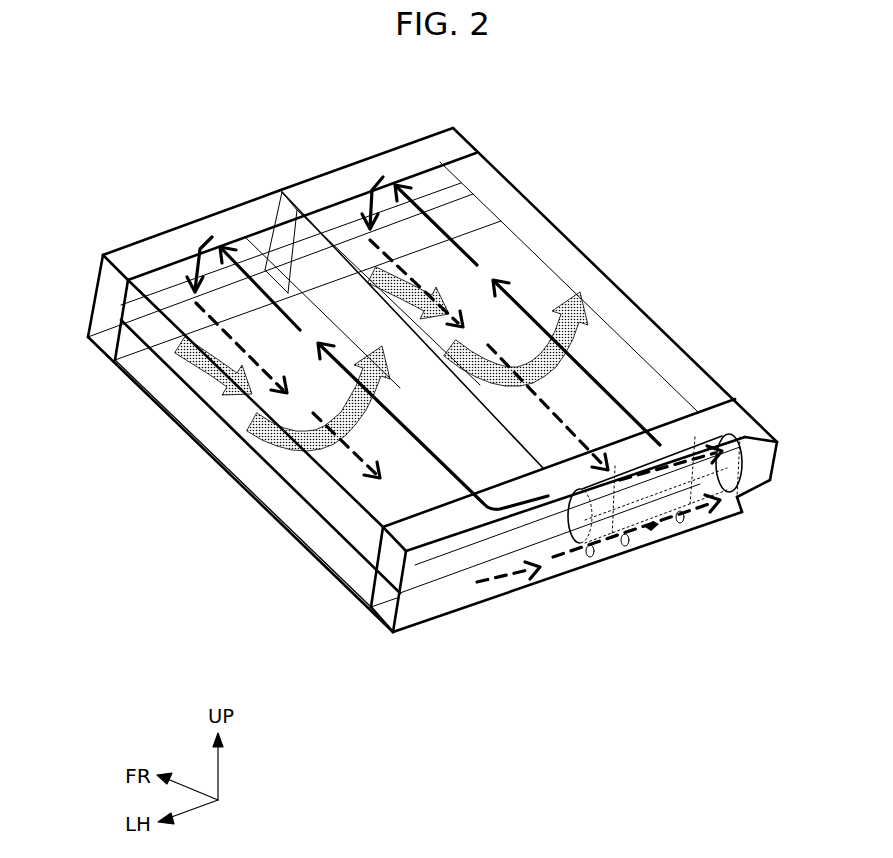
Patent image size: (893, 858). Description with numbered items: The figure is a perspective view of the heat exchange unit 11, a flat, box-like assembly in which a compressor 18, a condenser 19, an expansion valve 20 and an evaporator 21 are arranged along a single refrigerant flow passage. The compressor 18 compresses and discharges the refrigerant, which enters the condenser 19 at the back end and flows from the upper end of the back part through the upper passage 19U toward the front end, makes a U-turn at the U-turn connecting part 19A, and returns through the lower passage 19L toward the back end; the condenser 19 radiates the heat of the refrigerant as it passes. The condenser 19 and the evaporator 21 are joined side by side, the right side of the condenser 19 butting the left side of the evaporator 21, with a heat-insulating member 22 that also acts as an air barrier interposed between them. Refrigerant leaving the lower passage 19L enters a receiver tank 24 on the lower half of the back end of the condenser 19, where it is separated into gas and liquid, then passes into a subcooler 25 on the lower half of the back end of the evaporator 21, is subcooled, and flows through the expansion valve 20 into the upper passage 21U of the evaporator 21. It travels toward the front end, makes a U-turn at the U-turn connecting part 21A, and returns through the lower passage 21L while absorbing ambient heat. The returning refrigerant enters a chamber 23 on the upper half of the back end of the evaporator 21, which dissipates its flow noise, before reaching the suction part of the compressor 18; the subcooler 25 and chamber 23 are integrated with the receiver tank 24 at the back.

The heat exchange unit 11 is at (540, 185).
The compressor 18 is at (657, 532).
The condenser 19 is at (258, 521).
The U-turn connecting part 19A is at (162, 255).
The lower passage 19L is at (353, 462).
The upper passage 19U is at (413, 443).
The expansion valve 20 is at (740, 415).
The evaporator 21 is at (672, 318).
The U-turn connecting part 21A is at (410, 152).
The lower passage 21L is at (490, 327).
The upper passage 21U is at (487, 267).
The heat-insulating member 22 is at (343, 290).
The chamber 23 is at (767, 463).
The receiver tank 24 is at (452, 597).
The subcooler 25 is at (610, 552).